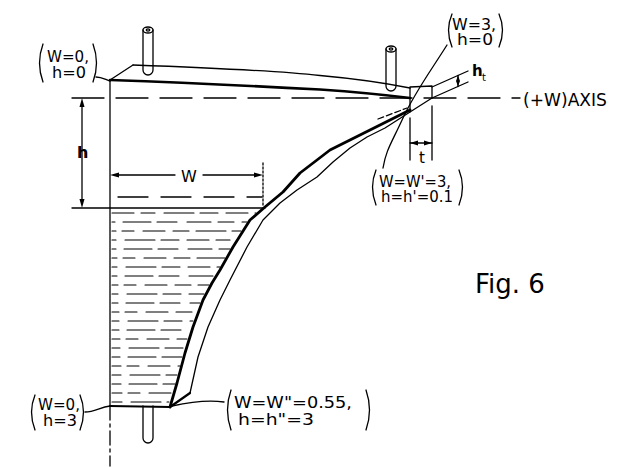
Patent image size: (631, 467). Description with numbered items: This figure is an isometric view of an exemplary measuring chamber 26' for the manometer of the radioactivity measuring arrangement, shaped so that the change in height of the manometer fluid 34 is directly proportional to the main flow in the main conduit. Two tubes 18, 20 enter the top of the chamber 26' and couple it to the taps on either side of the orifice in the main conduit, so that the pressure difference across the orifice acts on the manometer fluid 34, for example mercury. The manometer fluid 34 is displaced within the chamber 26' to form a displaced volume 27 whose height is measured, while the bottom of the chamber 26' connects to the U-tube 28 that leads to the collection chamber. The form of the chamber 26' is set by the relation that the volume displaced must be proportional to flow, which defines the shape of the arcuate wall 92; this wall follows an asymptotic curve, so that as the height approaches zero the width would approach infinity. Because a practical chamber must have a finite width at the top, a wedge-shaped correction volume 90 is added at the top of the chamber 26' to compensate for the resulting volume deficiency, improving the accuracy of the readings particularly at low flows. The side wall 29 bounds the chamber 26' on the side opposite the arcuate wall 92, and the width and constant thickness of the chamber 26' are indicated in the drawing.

The tube 18 is at (143, 44).
The tube 20 is at (397, 52).
The correction volume 90 is at (272, 100).
The displaced volume 27 is at (307, 157).
The arcuate wall 92 is at (210, 336).
The measuring chamber 26' is at (166, 220).
The side wall 29 is at (110, 276).
The manometer fluid 34 is at (118, 325).
The U-tube 28 is at (154, 431).